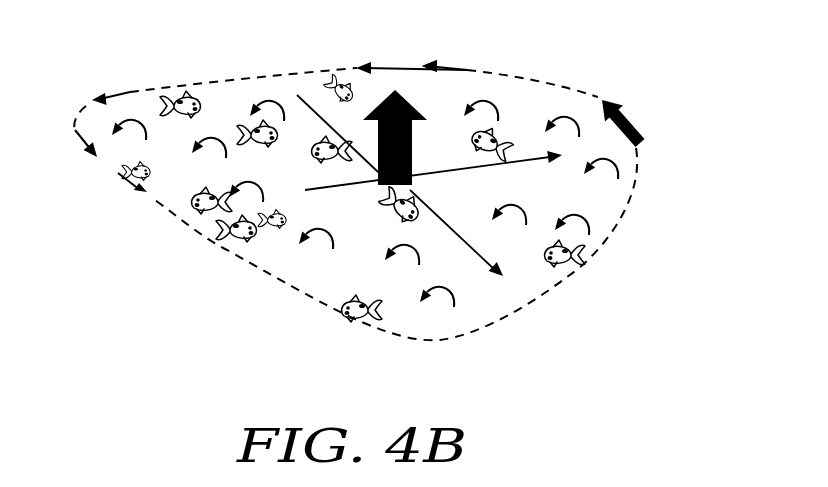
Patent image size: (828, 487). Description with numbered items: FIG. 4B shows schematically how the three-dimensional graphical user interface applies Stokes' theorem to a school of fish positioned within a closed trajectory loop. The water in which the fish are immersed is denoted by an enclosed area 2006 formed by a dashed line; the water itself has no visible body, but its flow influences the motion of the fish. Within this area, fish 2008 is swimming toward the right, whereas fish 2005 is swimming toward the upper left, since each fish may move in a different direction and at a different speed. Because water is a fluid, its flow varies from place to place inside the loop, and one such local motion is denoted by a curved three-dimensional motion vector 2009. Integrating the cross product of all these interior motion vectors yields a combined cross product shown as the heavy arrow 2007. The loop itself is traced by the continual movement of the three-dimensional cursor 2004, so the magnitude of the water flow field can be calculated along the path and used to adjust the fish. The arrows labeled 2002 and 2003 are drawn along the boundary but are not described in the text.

The water flow direction arrow 2002 is at (438, 65).
The circulating flow arrows 2003 is at (382, 65).
The 3D cursor 2004 is at (625, 98).
The fish 2005 is at (495, 133).
The enclosed area 2006 is at (520, 260).
The heavy arrow 2007 is at (395, 90).
The fish 2008 is at (270, 128).
The curved three-dimensional motion vector 2009 is at (437, 288).